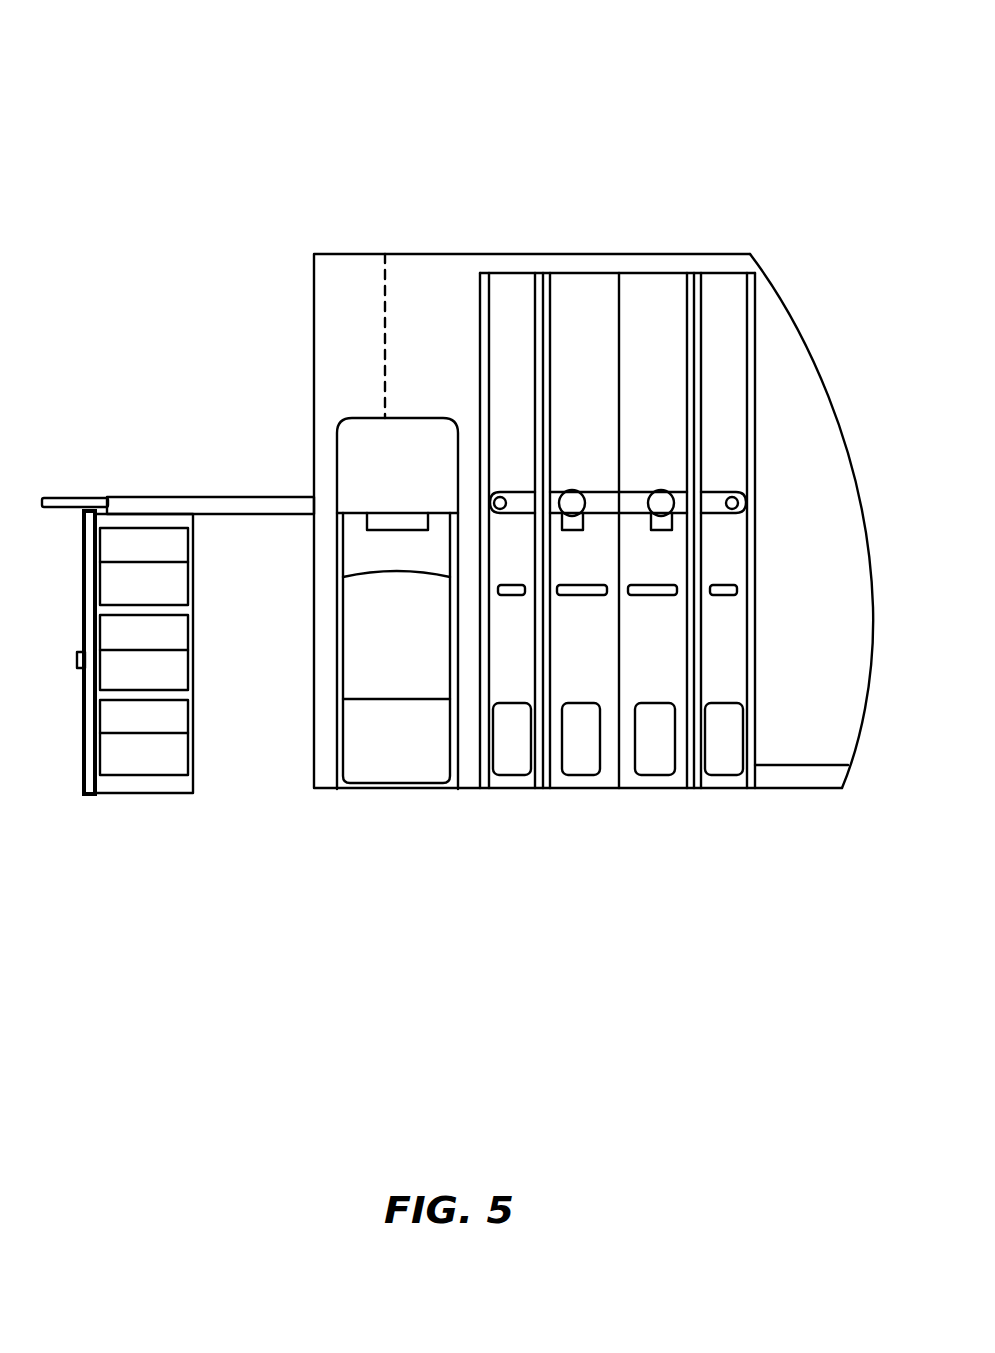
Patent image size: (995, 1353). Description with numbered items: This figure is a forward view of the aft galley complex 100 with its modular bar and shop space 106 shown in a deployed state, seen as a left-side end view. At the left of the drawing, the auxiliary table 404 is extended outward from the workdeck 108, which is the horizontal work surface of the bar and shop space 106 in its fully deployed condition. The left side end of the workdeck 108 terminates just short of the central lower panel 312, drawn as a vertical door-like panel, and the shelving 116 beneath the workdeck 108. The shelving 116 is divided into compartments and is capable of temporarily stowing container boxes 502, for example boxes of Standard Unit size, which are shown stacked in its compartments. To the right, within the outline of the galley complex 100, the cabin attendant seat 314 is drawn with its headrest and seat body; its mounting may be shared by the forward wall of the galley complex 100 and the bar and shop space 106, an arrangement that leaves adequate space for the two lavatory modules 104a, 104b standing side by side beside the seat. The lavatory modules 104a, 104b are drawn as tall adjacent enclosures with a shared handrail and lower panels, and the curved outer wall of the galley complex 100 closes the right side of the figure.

The galley complex 100 is at (140, 93).
The bar and shop space 106 is at (350, 272).
The cabin attendant seat 314 is at (375, 447).
The lavatory module 104a is at (575, 652).
The lavatory module 104b is at (723, 658).
The workdeck 108 is at (168, 505).
The auxiliary table 404 is at (70, 500).
The central lower panel 312 is at (82, 727).
The shelving 116 is at (232, 762).
The container boxes 502 is at (147, 757).